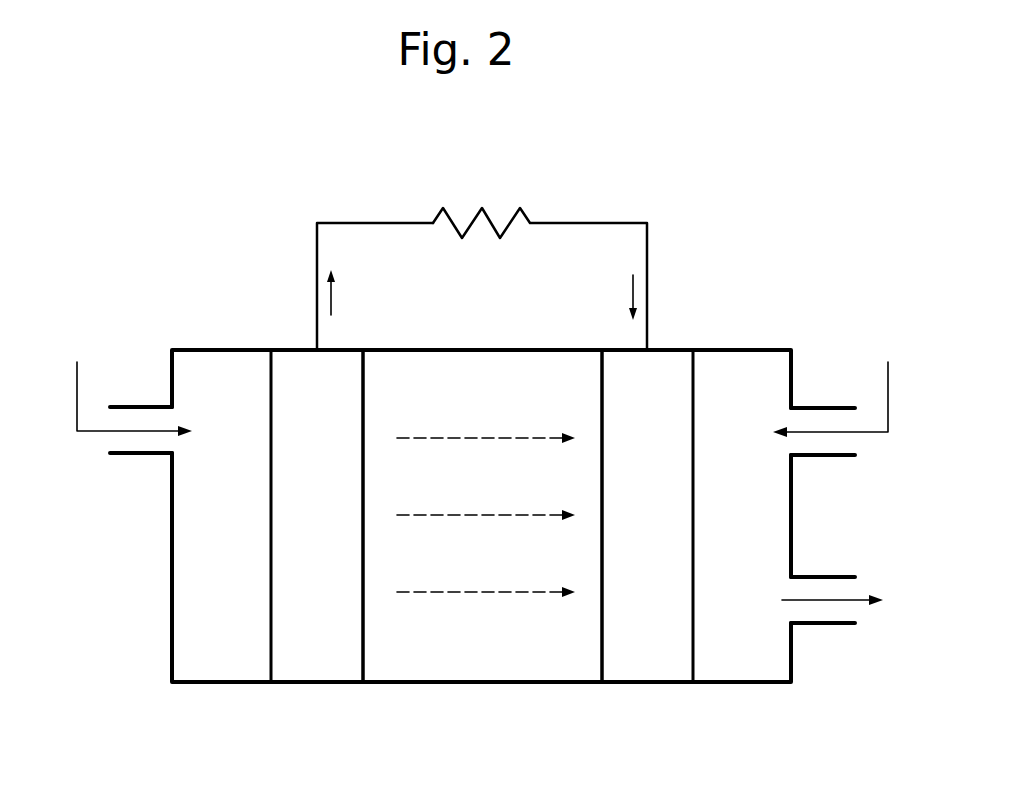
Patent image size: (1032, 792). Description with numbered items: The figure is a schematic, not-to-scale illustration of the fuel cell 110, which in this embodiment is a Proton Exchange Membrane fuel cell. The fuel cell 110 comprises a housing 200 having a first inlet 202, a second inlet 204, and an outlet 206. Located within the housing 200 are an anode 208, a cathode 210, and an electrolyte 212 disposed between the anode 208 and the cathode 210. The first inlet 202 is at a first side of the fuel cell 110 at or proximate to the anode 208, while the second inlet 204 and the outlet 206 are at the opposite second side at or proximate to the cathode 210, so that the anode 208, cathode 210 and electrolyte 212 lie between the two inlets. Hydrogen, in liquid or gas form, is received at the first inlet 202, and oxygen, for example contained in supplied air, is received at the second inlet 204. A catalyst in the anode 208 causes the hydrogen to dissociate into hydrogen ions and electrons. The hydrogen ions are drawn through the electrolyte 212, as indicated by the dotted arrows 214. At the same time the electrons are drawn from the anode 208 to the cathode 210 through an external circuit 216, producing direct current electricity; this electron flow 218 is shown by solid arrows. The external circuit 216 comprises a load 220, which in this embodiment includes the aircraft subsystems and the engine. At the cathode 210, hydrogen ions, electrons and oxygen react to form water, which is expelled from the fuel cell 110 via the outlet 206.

The fuel cell 110 is at (726, 203).
The housing 200 is at (210, 348).
The first inlet 202 is at (130, 455).
The second inlet 204 is at (838, 455).
The outlet 206 is at (838, 624).
The anode 208 is at (304, 668).
The cathode 210 is at (647, 657).
The electrolyte 212 is at (472, 660).
The hydrogen ion flow 214 is at (452, 438).
The external circuit 216 is at (343, 223).
The electron flow 218 is at (331, 294).
The load 220 is at (523, 212).